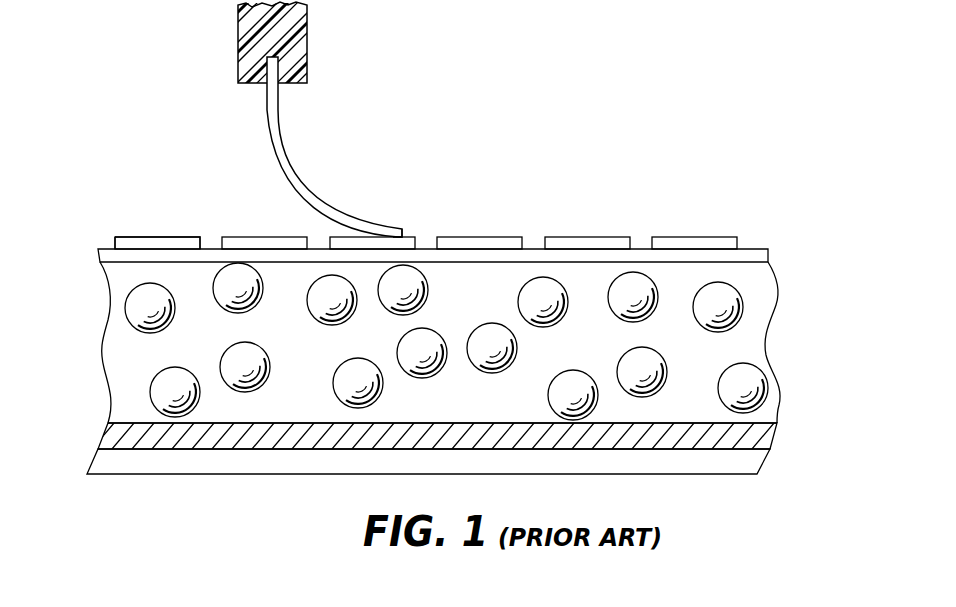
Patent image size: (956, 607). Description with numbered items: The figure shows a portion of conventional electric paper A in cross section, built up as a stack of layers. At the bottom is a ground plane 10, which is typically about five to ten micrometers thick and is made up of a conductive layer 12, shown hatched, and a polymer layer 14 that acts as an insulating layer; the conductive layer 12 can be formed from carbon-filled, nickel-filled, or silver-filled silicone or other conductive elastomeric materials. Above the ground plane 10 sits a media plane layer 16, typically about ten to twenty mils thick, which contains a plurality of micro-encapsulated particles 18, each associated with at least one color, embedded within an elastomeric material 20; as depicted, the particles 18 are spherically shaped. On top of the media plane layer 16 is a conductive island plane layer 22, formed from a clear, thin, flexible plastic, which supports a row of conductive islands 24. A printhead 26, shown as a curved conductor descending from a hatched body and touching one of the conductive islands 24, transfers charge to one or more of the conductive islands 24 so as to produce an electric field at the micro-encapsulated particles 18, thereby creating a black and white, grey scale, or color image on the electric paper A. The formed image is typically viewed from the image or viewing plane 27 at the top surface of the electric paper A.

The conventional electric paper A is at (625, 97).
The ground plane 10 is at (787, 423).
The conductive layer 12 is at (107, 437).
The polymer layer 14 is at (100, 465).
The media plane layer 16 is at (787, 262).
The micro-encapsulated particles 18 is at (138, 306).
The elastomeric material 20 is at (108, 330).
The conductive island plane layer 22 is at (100, 257).
The conductive islands 24 is at (262, 237).
The printhead 26 is at (283, 166).
The image and/or viewing plane 27 is at (404, 205).